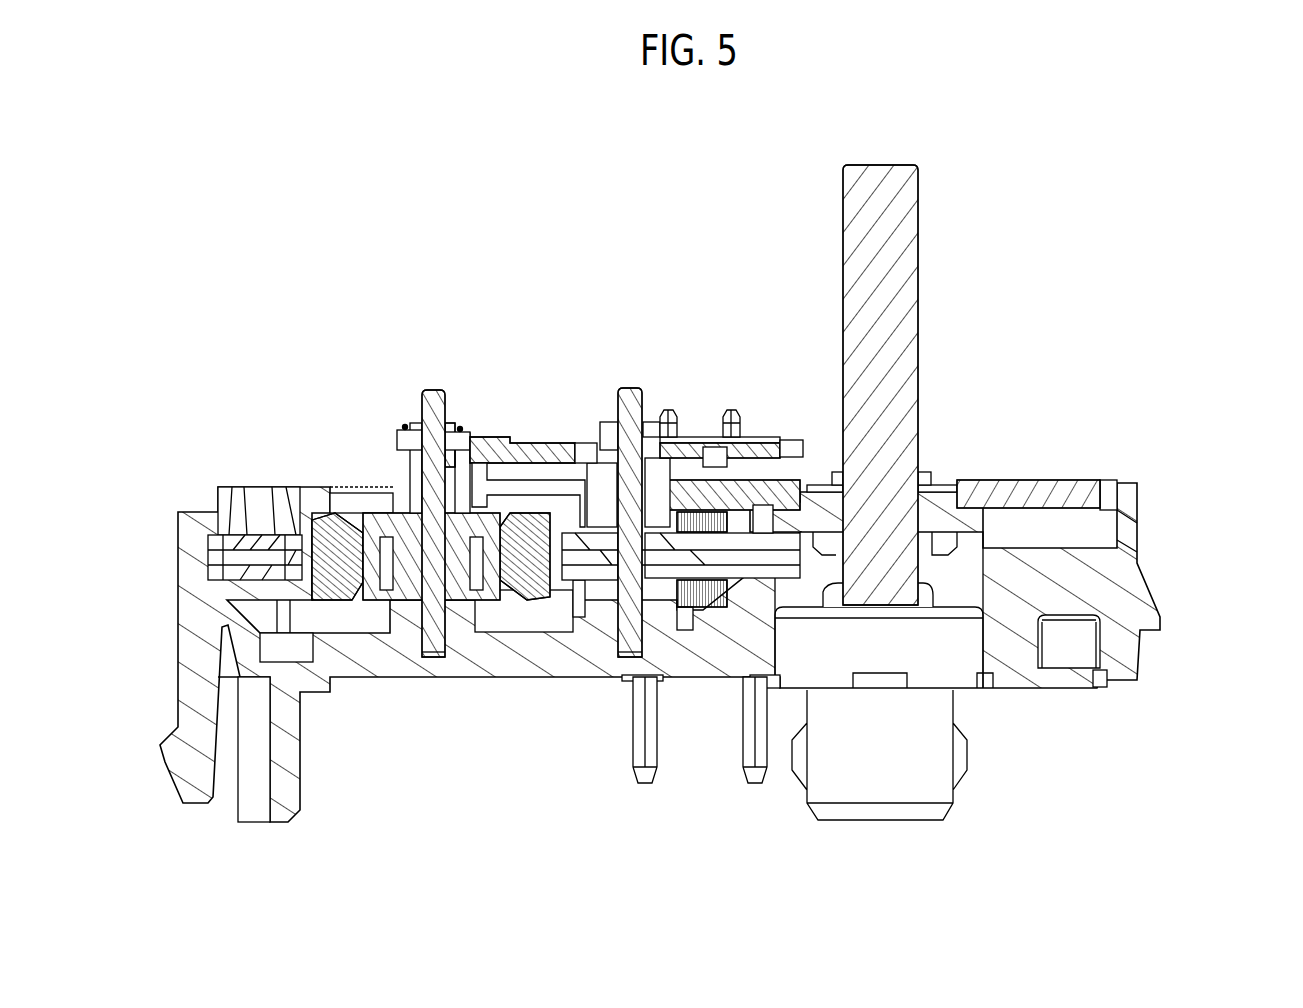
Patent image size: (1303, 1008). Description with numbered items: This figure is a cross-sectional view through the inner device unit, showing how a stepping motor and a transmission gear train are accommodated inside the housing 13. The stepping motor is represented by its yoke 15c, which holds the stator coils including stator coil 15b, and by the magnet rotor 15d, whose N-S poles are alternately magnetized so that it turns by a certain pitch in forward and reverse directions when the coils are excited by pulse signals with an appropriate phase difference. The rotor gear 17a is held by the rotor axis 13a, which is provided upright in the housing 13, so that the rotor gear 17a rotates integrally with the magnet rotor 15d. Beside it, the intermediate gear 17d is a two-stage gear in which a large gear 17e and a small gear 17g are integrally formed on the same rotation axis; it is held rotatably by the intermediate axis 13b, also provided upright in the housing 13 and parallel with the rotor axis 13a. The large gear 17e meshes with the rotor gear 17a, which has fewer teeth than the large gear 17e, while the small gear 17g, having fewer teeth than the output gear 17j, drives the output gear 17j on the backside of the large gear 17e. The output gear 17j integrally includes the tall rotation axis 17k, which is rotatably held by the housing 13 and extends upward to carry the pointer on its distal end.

The housing 13 is at (1140, 586).
The rotor axis 13a is at (432, 400).
The intermediate axis 13b is at (630, 400).
The stator coil 15b is at (693, 613).
The yoke 15c is at (268, 543).
The magnet rotor 15d is at (387, 520).
The rotor gear 17a is at (386, 439).
The intermediate gear 17d is at (699, 431).
The large gear 17e is at (480, 431).
The small gear 17g is at (580, 470).
The output gear 17j is at (1045, 469).
The rotation axis 17k is at (905, 285).